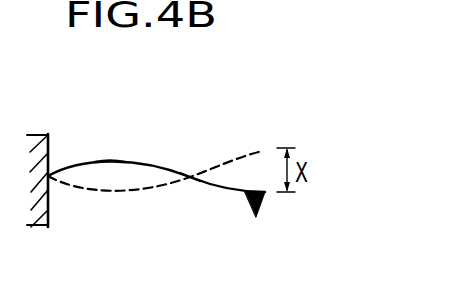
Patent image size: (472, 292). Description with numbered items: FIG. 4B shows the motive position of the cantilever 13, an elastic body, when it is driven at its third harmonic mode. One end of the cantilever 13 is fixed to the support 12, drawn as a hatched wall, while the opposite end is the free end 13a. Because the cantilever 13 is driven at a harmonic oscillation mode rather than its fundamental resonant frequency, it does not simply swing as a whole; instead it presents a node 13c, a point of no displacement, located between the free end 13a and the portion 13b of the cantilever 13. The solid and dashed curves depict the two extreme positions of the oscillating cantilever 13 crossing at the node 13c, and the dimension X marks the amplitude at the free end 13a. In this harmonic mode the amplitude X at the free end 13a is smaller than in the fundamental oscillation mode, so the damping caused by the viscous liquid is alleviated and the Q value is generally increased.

The support 12 is at (48, 214).
The cantilever 13 is at (164, 165).
The free end 13a is at (261, 146).
The cantilever portion 13b is at (110, 152).
The node 13c is at (192, 184).